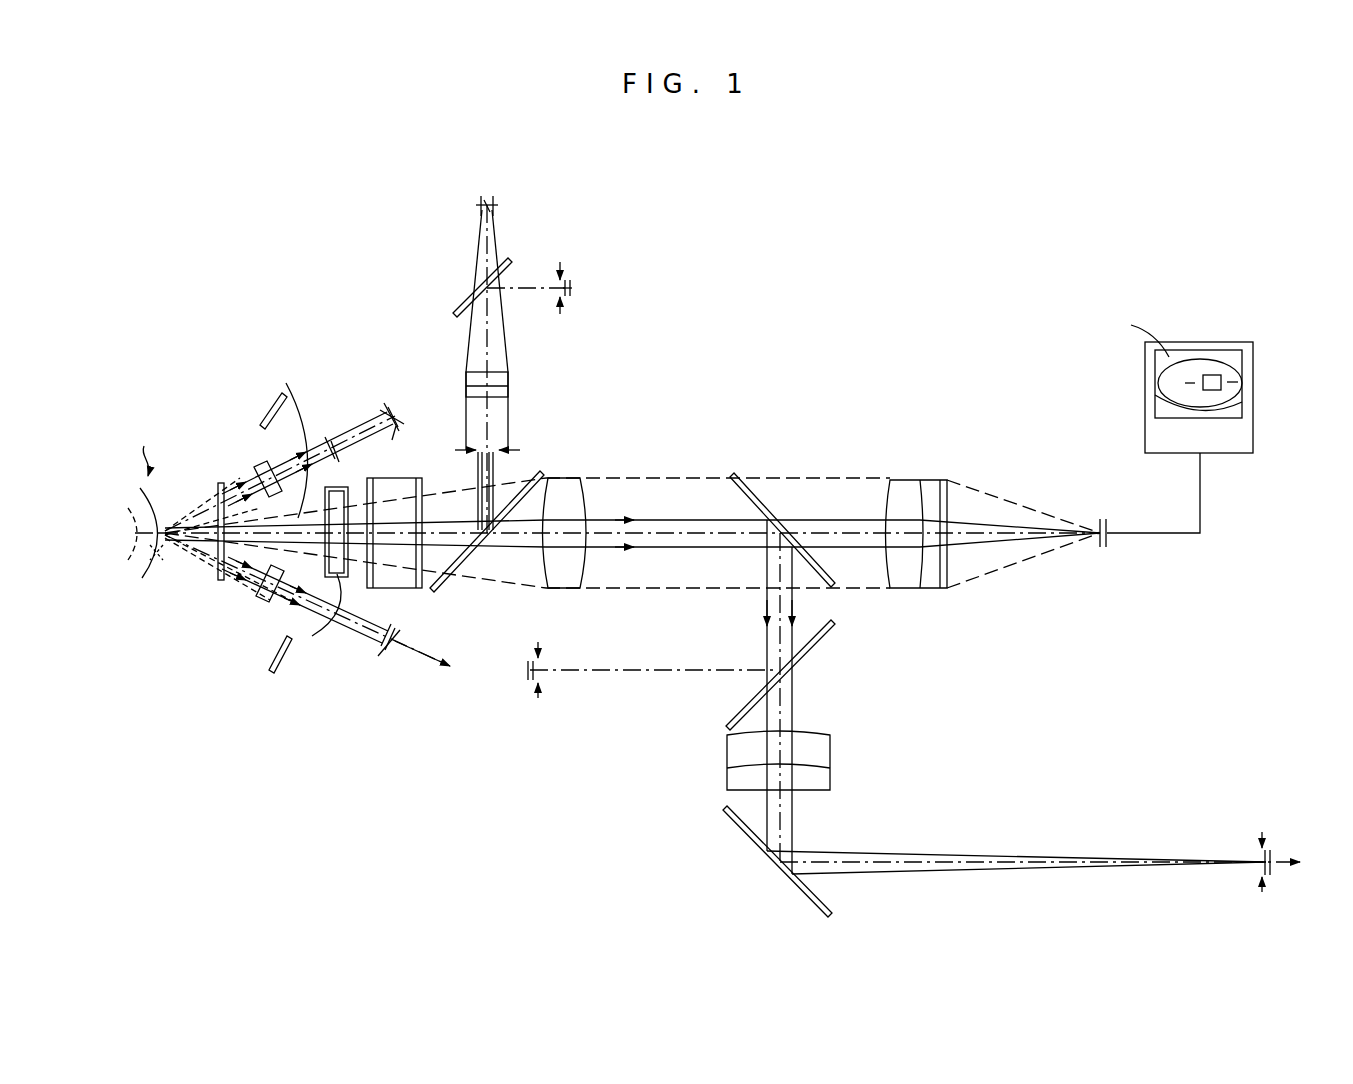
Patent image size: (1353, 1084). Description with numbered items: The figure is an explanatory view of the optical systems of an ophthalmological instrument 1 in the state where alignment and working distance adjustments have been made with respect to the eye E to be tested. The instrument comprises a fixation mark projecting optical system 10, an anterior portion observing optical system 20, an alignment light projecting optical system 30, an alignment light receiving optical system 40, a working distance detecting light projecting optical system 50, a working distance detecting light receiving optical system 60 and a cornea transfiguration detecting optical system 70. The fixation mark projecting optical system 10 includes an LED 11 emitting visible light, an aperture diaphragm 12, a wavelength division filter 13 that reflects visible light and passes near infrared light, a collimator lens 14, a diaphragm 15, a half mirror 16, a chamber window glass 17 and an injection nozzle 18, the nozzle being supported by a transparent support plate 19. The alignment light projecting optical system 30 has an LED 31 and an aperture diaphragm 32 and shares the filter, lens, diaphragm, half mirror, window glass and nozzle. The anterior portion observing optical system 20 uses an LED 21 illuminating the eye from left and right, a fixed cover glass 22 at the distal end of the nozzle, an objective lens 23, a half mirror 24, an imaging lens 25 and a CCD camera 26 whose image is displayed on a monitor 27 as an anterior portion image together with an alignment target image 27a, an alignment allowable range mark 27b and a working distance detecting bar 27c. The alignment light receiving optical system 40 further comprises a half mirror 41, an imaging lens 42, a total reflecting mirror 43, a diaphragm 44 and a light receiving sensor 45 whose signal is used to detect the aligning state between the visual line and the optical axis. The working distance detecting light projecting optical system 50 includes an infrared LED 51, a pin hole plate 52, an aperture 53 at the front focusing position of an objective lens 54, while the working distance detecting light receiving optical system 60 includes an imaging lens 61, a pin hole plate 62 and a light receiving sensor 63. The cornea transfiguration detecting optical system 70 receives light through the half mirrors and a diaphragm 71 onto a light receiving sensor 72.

The ophthalmological instrument 1 is at (976, 364).
The fixation mark projecting optical system 10 is at (592, 278).
The LED 11 is at (573, 293).
The aperture diaphragm 12 is at (561, 268).
The wavelength division filter 13 is at (452, 316).
The collimator lens 14 is at (498, 384).
The diaphragm 15 is at (512, 448).
The half mirror 16 is at (538, 474).
The chamber window glass 17 is at (398, 490).
The injection nozzle 18 is at (287, 437).
The transparent support plate 19 is at (319, 620).
The anterior portion observing optical system 20 is at (812, 458).
The LED 21 is at (262, 418).
The fixed cover glass 22 is at (218, 484).
The objective lens 23 is at (568, 590).
The half mirror 24 is at (756, 492).
The imaging lens 25 is at (905, 488).
The CCD camera 26 is at (1108, 540).
The monitor 27 is at (1217, 378).
The alignment target image 27a is at (1213, 375).
The alignment allowable range mark 27b is at (1240, 378).
The working distance detecting bar 27c is at (1190, 380).
The alignment light projecting optical system 30 is at (458, 272).
The LED 31 is at (498, 210).
The aperture diaphragm 32 is at (476, 208).
The alignment light receiving optical system 40 is at (1106, 812).
The half mirror 41 is at (835, 628).
The imaging lens 42 is at (832, 748).
The total reflecting mirror 43 is at (747, 833).
The diaphragm 44 is at (1260, 878).
The light receiving sensor 45 is at (1274, 868).
The working distance detecting light projecting optical system 50 is at (328, 373).
The infrared LED 51 is at (397, 414).
The pin hole plate 52 is at (383, 410).
The aperture 53 is at (325, 440).
The objective lens 54 is at (262, 466).
The working distance detecting light receiving optical system 60 is at (334, 680).
The imaging lens 61 is at (256, 598).
The pin hole plate 62 is at (382, 651).
The light receiving sensor 63 is at (399, 640).
The cornea transfiguration detecting optical system 70 is at (640, 690).
The diaphragm 71 is at (541, 680).
The light receiving sensor 72 is at (525, 678).